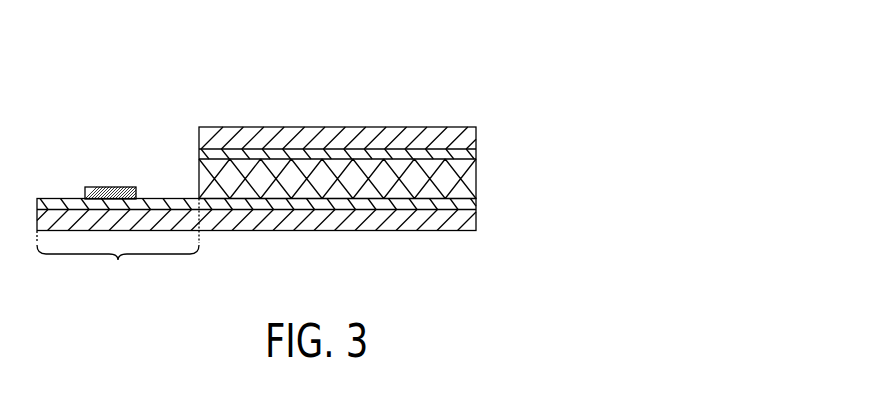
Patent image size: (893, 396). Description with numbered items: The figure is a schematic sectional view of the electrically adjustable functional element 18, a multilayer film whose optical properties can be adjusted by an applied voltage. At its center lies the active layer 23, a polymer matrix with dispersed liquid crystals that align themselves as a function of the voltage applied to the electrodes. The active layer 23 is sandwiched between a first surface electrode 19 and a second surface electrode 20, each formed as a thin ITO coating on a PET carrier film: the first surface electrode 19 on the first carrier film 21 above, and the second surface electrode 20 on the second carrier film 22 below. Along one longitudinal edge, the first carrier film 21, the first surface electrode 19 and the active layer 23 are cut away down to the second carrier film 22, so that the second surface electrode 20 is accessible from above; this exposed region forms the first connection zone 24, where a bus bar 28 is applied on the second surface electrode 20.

The electrically adjustable functional element 18 is at (336, 86).
The first surface electrode 19 is at (476, 153).
The second surface electrode 20 is at (476, 205).
The first carrier film 21 is at (476, 135).
The second carrier film 22 is at (476, 218).
The active layer 23 is at (476, 179).
The first connection zone 24 is at (118, 249).
The bus bar 28 is at (97, 185).